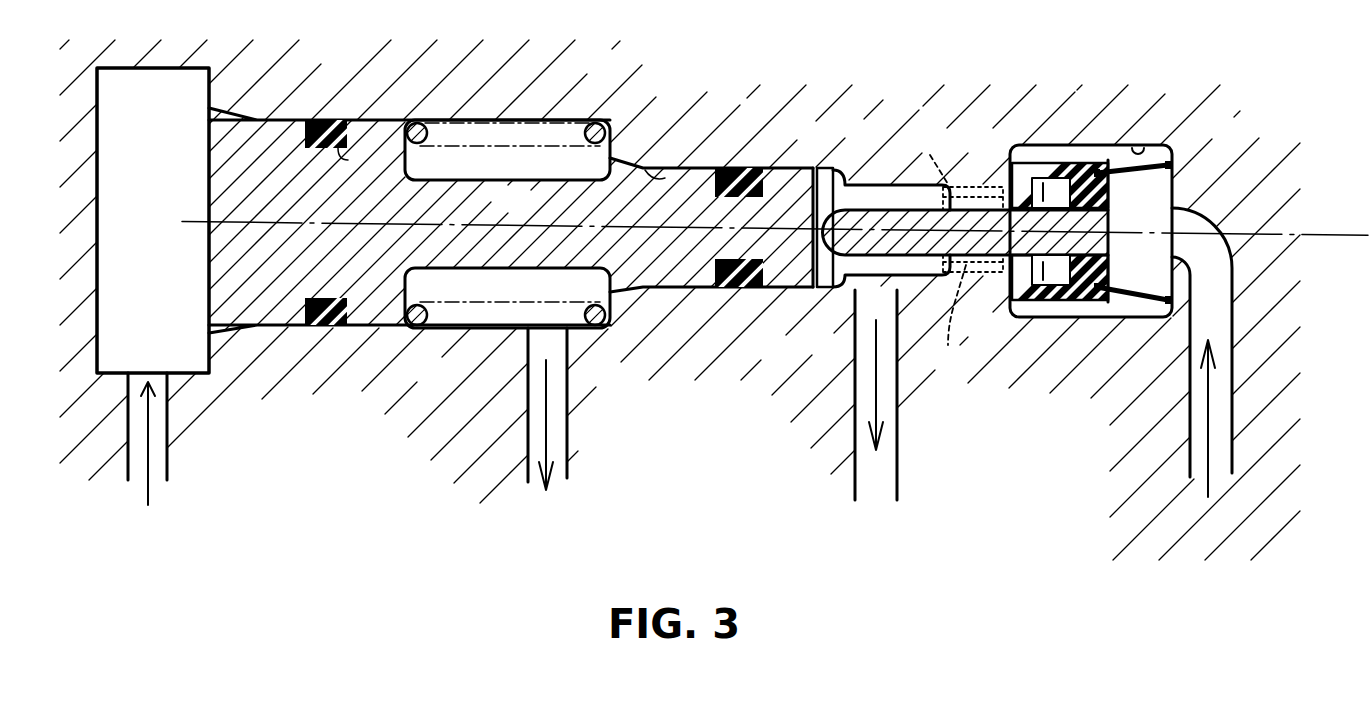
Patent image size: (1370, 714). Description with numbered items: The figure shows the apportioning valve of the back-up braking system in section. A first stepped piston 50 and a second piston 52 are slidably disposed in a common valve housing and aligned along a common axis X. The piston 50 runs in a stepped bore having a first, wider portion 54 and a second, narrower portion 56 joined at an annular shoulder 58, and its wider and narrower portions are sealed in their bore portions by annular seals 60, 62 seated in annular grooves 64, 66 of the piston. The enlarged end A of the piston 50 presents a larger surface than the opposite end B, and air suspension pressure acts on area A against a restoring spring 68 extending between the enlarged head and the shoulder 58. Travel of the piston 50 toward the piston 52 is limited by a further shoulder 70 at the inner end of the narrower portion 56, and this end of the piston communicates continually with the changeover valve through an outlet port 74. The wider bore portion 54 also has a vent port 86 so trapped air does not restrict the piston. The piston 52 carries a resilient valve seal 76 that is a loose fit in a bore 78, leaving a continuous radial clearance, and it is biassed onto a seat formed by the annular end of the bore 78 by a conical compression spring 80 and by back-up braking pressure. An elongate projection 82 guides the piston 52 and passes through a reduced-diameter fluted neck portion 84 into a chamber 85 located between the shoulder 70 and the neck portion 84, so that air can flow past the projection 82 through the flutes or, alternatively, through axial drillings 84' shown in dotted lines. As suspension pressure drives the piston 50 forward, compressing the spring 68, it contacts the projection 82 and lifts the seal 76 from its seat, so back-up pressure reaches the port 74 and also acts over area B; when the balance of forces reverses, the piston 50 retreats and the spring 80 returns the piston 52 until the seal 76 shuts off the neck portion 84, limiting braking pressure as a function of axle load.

The end of piston A is at (208, 177).
The opposite end of piston B is at (817, 168).
The common axis X is at (1312, 234).
The first stepped piston 50 is at (497, 210).
The second piston 52 is at (1030, 258).
The first wider bore portion 54 is at (285, 123).
The second narrower bore portion 56 is at (672, 167).
The annular shoulder 58 is at (612, 128).
The annular seal 60 is at (347, 148).
The annular seal 62 is at (738, 167).
The annular groove 64 is at (306, 145).
The annular groove 66 is at (715, 187).
The restoring spring 68 is at (418, 325).
The further shoulder 70 is at (812, 290).
The outlet port 74 is at (853, 302).
The resilient valve seal 76 is at (1050, 200).
The bore 78 is at (1147, 145).
The conical compression spring 80 is at (1180, 174).
The elongate projection 82 is at (847, 213).
The fluted neck portion 84 is at (973, 201).
The axial drillings 84' is at (940, 249).
The chamber 85 is at (887, 197).
The vent port 86 is at (553, 331).